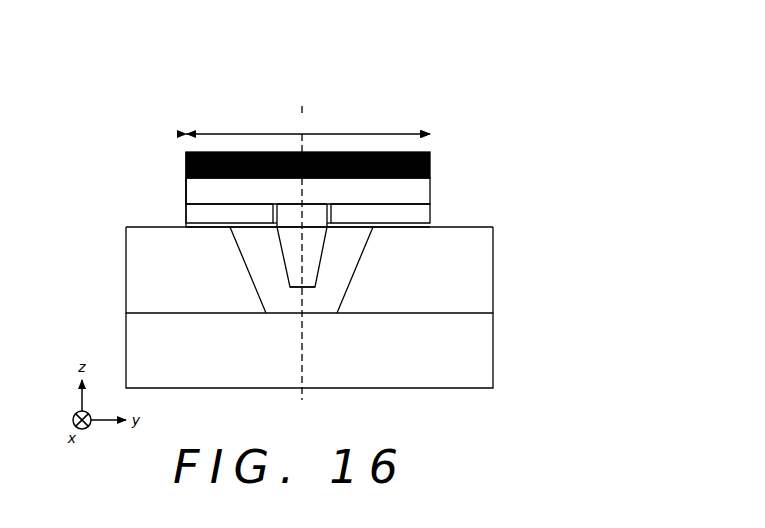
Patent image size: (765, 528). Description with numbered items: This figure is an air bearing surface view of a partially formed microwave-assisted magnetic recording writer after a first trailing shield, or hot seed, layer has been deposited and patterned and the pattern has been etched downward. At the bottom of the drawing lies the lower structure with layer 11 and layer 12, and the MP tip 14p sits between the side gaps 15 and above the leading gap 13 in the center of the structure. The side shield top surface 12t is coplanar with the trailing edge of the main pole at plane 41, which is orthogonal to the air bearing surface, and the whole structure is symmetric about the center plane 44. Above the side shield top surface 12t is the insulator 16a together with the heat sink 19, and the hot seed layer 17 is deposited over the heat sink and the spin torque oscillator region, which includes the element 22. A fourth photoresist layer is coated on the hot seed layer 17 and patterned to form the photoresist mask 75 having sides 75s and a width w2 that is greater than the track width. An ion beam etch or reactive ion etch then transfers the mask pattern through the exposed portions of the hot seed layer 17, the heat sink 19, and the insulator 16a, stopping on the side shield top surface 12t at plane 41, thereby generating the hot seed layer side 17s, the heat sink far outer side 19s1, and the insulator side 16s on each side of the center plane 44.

The substrate 11 is at (140, 335).
The semiconductor layer 12 is at (140, 285).
The side shield top surface 12t is at (488, 227).
The leading gap 13 is at (292, 305).
The MP tip 14p is at (304, 279).
The side gaps 15 is at (255, 260).
The insulator side 16s is at (186, 215).
The insulator 16a is at (430, 222).
The hot seed layer 17 is at (420, 188).
The hot seed layer side 17s is at (186, 193).
The heat sink 19 is at (207, 212).
The heat sink far (outer) side 19s1 is at (186, 200).
The opening 22 is at (315, 217).
The plane 41- 41 is at (118, 228).
The center plane 44- 44 is at (302, 256).
The photoresist mask 75 is at (430, 167).
The sides of photoresist mask 75s is at (186, 166).
The width of photoresist mask w2 is at (308, 125).